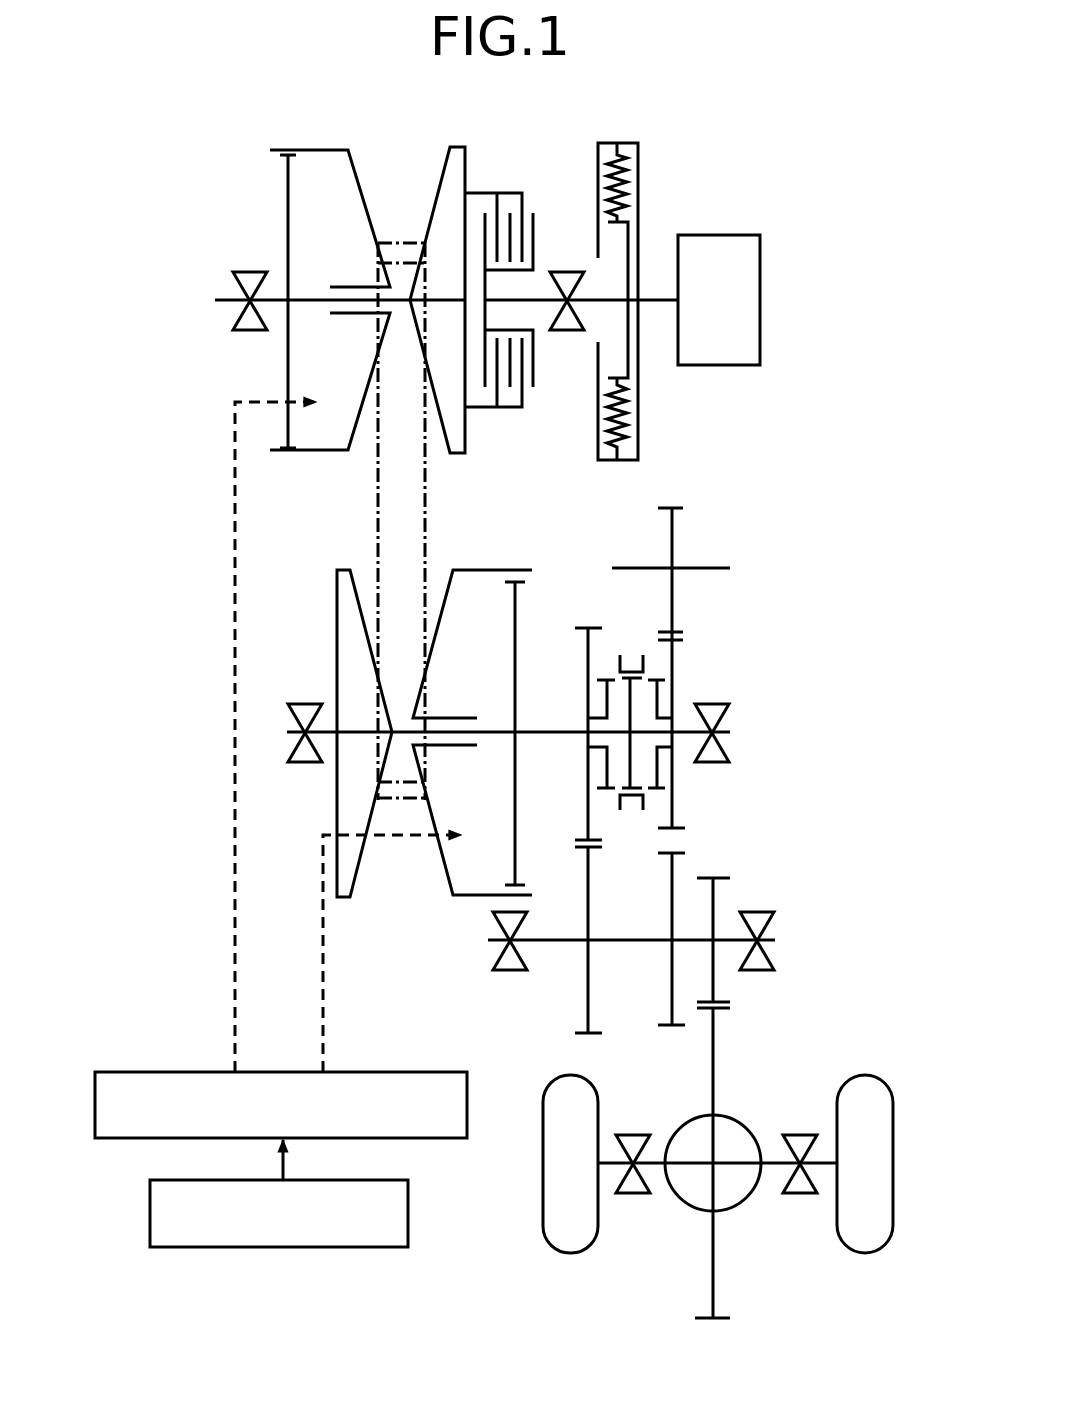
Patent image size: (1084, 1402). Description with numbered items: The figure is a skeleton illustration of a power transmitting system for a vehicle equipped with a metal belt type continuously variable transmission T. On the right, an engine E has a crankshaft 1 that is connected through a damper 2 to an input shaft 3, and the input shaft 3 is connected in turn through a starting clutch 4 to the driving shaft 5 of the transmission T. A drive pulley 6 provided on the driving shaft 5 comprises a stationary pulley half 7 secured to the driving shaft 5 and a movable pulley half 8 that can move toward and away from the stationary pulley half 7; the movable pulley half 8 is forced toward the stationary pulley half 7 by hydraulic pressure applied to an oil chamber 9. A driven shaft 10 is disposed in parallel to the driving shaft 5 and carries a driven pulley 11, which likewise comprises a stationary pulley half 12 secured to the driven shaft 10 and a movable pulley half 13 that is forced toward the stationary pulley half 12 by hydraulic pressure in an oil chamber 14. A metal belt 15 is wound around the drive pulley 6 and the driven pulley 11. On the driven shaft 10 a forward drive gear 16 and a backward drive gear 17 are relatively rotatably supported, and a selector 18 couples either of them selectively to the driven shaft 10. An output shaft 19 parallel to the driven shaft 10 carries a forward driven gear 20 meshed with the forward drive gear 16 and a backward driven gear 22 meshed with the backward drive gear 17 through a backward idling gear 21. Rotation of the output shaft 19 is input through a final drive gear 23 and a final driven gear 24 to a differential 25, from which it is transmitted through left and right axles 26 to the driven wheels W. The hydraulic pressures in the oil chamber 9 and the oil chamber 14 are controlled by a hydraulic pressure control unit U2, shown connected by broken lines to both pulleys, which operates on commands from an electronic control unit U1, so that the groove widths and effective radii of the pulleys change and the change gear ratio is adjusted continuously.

The crankshaft 1 is at (657, 307).
The damper 2 is at (650, 183).
The input shaft 3 is at (588, 300).
The starting clutch 4 is at (509, 186).
The driving shaft 5 is at (305, 297).
The drive pulley 6 is at (367, 276).
The stationary pulley half 7 is at (448, 180).
The movable pulley half 8 is at (355, 183).
The oil chamber 9 is at (323, 371).
The driven shaft 10 is at (573, 727).
The driven pulley 11 is at (403, 767).
The stationary pulley half 12 is at (337, 608).
The movable pulley half 13 is at (449, 602).
The oil chamber 14 is at (476, 817).
The metal belt 15 is at (428, 525).
The forward drive gear 16 is at (583, 628).
The backward drive gear 17 is at (680, 642).
The selector 18 is at (630, 808).
The output shaft 19 is at (612, 937).
The forward driven gear 20 is at (600, 1033).
The backward idling gear 21 is at (680, 508).
The backward driven gear 22 is at (665, 1028).
The final drive gear 23 is at (722, 878).
The final driven gear 24 is at (733, 1008).
The differential 25 is at (742, 1120).
The axles 26 is at (650, 1167).
The metal belt type continuously variable transmission T is at (327, 507).
The engine E is at (714, 311).
The driven wheels W is at (543, 1230).
The electronic control unit U1 is at (408, 1190).
The hydraulic pressure control unit U2 is at (467, 1086).